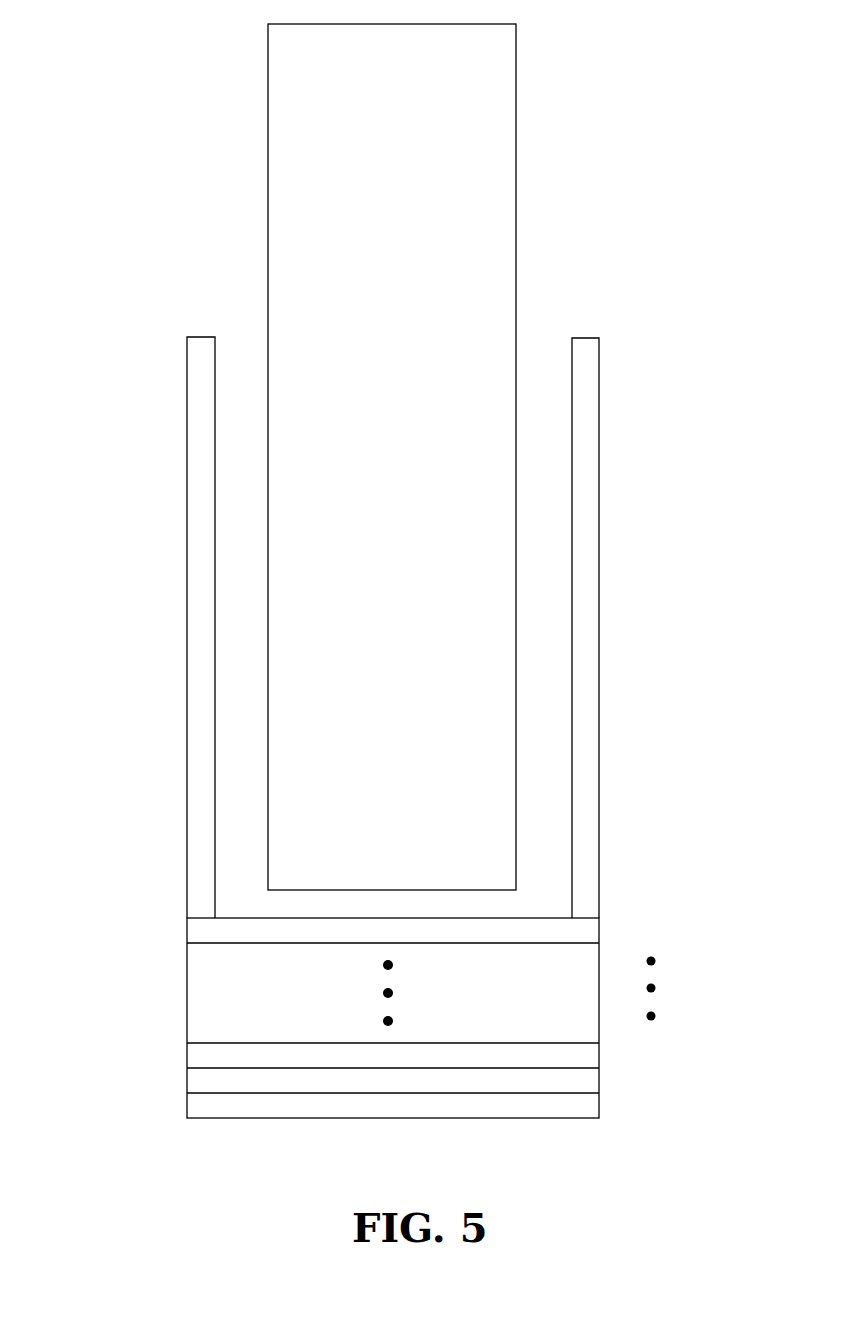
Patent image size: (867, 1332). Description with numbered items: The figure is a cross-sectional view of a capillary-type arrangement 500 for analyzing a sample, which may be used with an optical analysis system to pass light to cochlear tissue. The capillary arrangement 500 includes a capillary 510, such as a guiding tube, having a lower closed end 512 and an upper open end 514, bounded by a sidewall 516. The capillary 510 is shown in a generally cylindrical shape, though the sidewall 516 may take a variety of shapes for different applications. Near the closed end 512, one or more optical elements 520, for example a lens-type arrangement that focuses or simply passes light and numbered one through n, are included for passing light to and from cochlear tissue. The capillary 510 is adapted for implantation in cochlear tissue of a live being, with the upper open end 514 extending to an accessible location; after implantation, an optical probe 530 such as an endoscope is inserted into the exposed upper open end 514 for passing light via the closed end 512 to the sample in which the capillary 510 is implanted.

The capillary-type arrangement 500 is at (146, 38).
The capillary 510 is at (600, 708).
The lower closed end 512 is at (163, 1095).
The upper open end 514 is at (168, 342).
The sidewall 516 is at (588, 338).
The optical elements 520 is at (677, 921).
The optical probe 530 is at (517, 155).